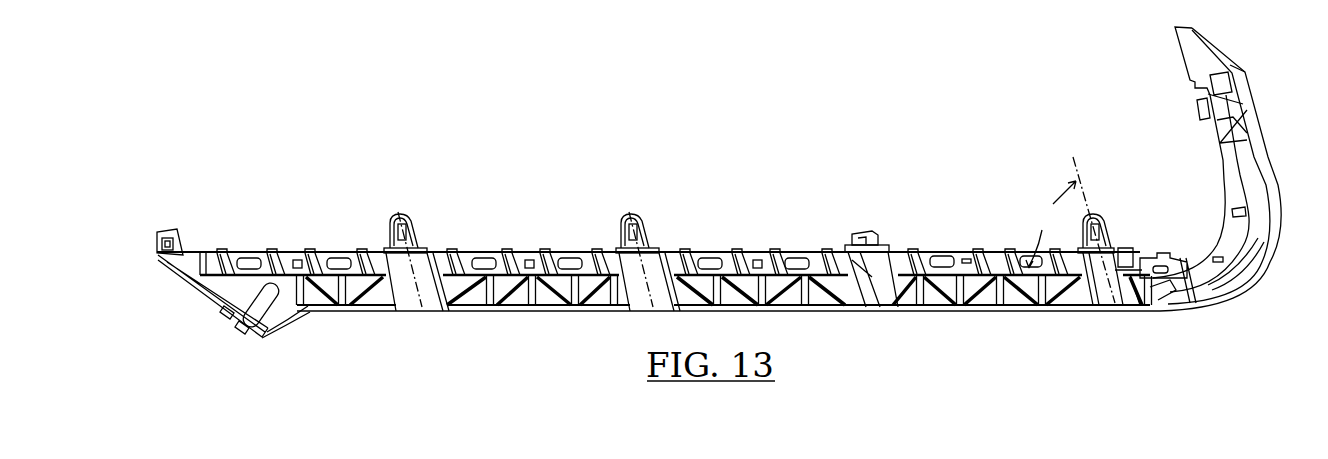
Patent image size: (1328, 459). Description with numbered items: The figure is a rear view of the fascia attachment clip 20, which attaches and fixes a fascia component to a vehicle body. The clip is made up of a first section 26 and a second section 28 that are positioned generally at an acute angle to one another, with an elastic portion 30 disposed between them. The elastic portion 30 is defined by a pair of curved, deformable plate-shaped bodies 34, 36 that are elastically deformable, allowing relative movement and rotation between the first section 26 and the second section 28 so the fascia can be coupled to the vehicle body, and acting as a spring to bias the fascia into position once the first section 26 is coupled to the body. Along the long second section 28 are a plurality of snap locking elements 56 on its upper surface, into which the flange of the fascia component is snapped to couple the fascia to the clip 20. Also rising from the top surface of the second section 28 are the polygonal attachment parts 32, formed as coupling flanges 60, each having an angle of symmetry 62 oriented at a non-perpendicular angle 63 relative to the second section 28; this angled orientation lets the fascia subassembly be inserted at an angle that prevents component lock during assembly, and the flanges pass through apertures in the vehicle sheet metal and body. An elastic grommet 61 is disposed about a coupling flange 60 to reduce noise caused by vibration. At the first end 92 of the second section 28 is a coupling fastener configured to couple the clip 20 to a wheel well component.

The fascia attachment clip 20 is at (985, 298).
The first section 26 is at (1250, 143).
The second section 28 is at (868, 312).
The elastic portion 30 is at (1242, 297).
The attachment parts 32 is at (418, 228).
The curved plate-shaped body 34 is at (1265, 272).
The curved plate-shaped body 36 is at (1237, 232).
The snap locking elements 56 is at (333, 256).
The coupling flanges 60 is at (1110, 219).
The elastic grommet 61 is at (1093, 253).
The angle of symmetry 62 is at (1072, 156).
The non-perpendicular angle 63 is at (1051, 224).
The first end 92 is at (263, 337).